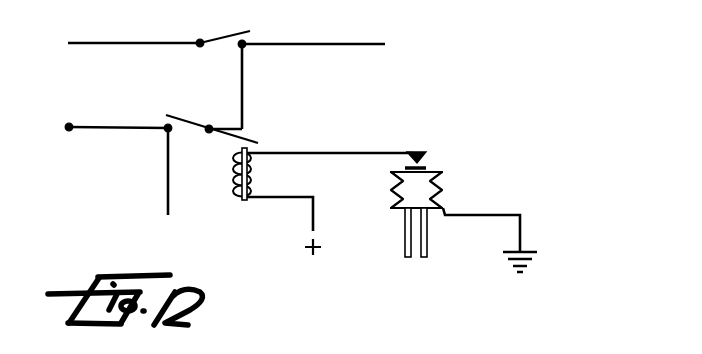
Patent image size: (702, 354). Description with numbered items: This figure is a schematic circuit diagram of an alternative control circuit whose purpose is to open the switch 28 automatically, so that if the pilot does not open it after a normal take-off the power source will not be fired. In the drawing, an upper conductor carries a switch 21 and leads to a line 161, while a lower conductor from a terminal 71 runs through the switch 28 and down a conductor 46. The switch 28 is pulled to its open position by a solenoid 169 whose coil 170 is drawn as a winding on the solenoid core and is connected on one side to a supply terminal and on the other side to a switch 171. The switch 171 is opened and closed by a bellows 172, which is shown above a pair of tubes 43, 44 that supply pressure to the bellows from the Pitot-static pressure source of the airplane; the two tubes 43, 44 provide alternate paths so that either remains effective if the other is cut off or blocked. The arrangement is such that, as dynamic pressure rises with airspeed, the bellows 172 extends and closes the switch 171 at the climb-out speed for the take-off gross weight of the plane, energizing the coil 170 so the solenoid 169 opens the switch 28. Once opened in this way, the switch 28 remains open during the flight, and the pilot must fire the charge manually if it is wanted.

The switch 21 is at (227, 34).
The conductor 161 is at (292, 44).
The terminal 71 is at (70, 123).
The switch 28 is at (185, 116).
The conductor 46 is at (167, 184).
The coil 170 is at (253, 169).
The solenoid 169 is at (241, 200).
The switch 171 is at (425, 163).
The bellows 172 is at (443, 182).
The tube 43 is at (405, 243).
The tube 44 is at (427, 243).